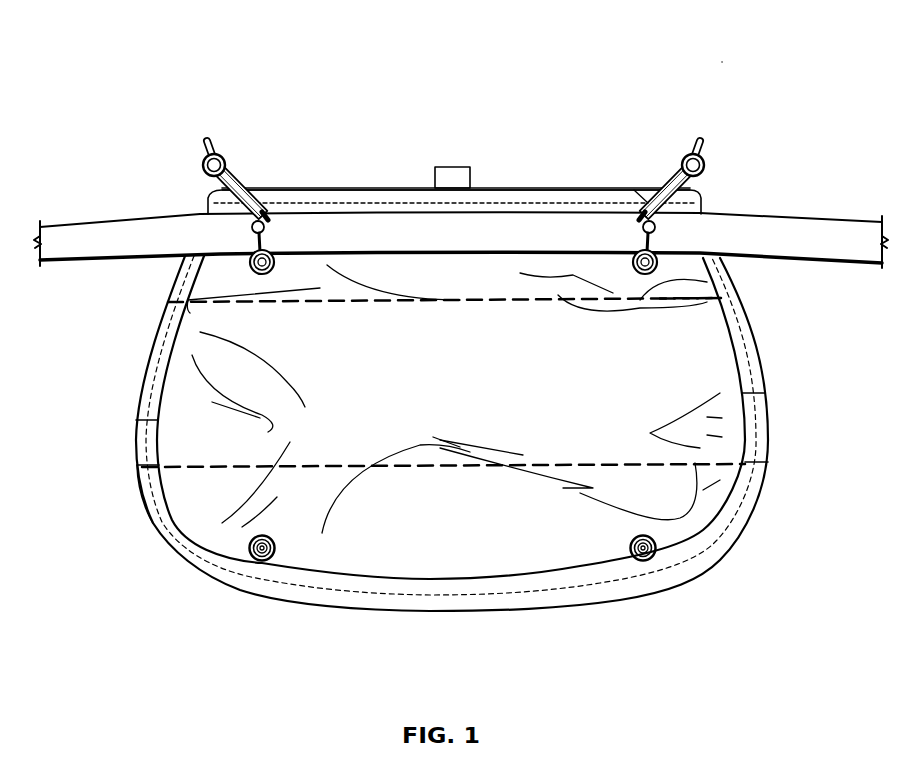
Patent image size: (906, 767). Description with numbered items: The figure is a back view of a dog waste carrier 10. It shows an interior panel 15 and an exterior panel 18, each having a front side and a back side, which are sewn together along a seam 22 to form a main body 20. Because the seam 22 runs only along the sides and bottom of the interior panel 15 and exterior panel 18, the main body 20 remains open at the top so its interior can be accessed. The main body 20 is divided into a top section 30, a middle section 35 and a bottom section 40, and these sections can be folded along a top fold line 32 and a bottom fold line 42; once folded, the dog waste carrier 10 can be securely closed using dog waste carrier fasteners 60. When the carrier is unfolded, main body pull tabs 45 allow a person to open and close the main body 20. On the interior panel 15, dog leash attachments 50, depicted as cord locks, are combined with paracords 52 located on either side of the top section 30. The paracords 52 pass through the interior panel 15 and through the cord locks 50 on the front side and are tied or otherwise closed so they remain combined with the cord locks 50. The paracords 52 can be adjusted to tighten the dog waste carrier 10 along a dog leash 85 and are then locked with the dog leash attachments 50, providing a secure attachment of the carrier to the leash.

The dog waste carrier 10 is at (724, 60).
The interior panel 15 is at (320, 205).
The exterior panel 18 is at (400, 187).
The main body 20 is at (195, 566).
The seam 22 is at (755, 395).
The top section 30 is at (175, 289).
The top fold line 32 is at (740, 300).
The middle section 35 is at (137, 418).
The bottom section 40 is at (152, 514).
The bottom fold line 42 is at (708, 463).
The main body pull tabs 45 is at (455, 166).
The dog leash attachments 50 is at (636, 190).
The paracords 52 is at (219, 150).
The dog waste carrier fasteners 60 is at (262, 560).
The dog leash 85 is at (765, 222).